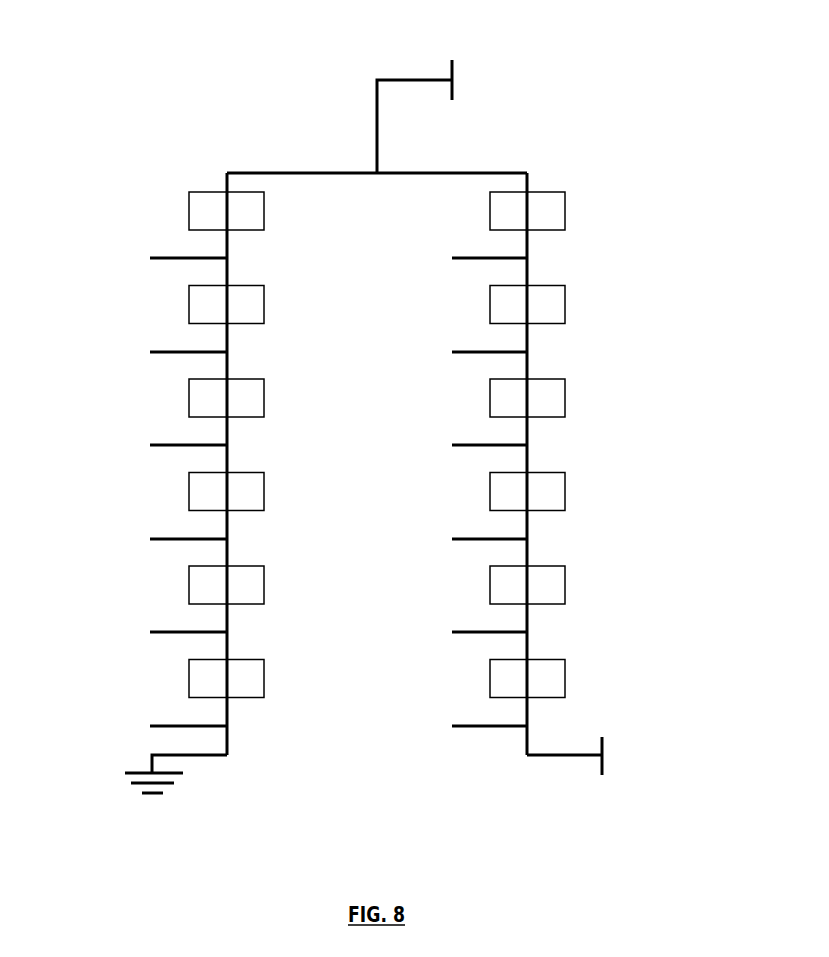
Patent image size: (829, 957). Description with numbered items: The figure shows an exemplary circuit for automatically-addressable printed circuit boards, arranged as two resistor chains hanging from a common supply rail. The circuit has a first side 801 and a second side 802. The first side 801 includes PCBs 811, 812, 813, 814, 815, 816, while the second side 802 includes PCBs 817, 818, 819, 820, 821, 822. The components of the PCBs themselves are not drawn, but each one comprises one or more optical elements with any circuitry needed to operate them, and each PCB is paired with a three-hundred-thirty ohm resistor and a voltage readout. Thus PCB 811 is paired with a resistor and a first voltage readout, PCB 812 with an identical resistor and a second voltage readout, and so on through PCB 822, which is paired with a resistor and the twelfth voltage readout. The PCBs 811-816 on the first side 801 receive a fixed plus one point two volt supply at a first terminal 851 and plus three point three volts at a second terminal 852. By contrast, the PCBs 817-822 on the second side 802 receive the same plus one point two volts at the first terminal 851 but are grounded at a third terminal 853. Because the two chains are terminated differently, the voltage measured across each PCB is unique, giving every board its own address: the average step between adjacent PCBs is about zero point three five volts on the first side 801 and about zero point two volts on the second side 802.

The first side 801 is at (496, 142).
The second side 802 is at (263, 141).
The PCB 811 is at (559, 177).
The PCB 812 is at (559, 267).
The PCB 813 is at (559, 361).
The PCB 814 is at (559, 454).
The PCB 815 is at (559, 548).
The PCB 816 is at (559, 641).
The PCB 817 is at (256, 250).
The PCB 818 is at (256, 344).
The PCB 819 is at (256, 437).
The PCB 820 is at (256, 531).
The PCB 821 is at (256, 624).
The PCB 822 is at (256, 718).
The first terminal 851 is at (440, 42).
The second terminal 852 is at (652, 785).
The third terminal 853 is at (115, 794).